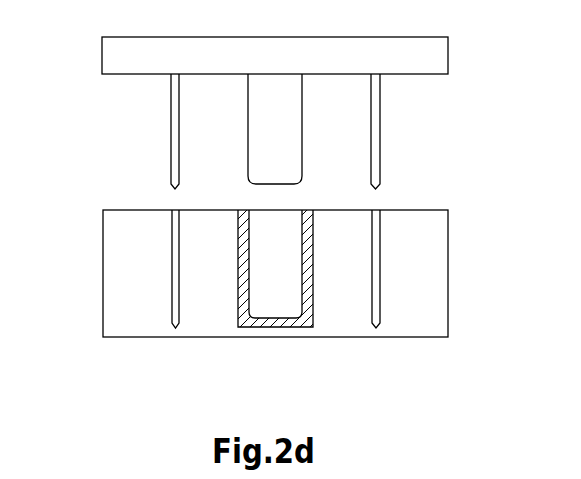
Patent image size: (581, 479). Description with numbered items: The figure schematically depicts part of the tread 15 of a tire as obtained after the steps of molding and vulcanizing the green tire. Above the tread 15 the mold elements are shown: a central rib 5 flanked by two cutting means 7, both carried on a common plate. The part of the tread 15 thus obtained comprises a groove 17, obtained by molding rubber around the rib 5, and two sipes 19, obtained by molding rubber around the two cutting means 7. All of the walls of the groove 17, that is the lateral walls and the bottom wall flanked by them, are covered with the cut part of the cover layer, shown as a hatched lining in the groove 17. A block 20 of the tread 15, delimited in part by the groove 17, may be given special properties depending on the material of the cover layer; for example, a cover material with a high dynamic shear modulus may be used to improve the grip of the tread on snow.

The rib 5 is at (280, 110).
The cutting means 7 is at (389, 136).
The tread 15 is at (475, 208).
The groove 17 is at (284, 272).
The sipes 19 is at (172, 260).
The block 20 is at (443, 359).